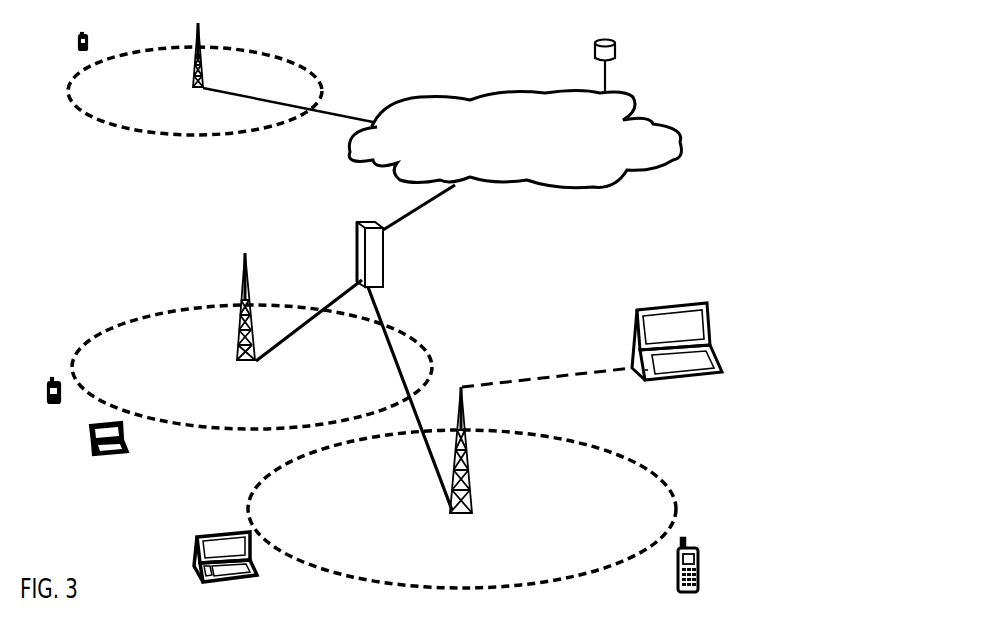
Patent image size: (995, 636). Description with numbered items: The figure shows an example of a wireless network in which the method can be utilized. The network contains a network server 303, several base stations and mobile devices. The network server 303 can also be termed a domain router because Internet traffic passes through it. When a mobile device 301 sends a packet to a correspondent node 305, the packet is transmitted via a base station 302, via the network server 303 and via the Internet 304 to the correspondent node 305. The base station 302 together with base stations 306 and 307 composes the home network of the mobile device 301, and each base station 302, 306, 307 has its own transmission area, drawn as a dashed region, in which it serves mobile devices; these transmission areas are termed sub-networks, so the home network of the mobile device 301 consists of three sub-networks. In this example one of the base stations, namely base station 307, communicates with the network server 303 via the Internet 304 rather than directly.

The mobile device 301 is at (718, 340).
The base station 302 is at (445, 508).
The network server 303 is at (353, 226).
The Internet 304 is at (665, 137).
The correspondent node 305 is at (600, 36).
The base station 306 is at (233, 358).
The base station 307 is at (185, 87).